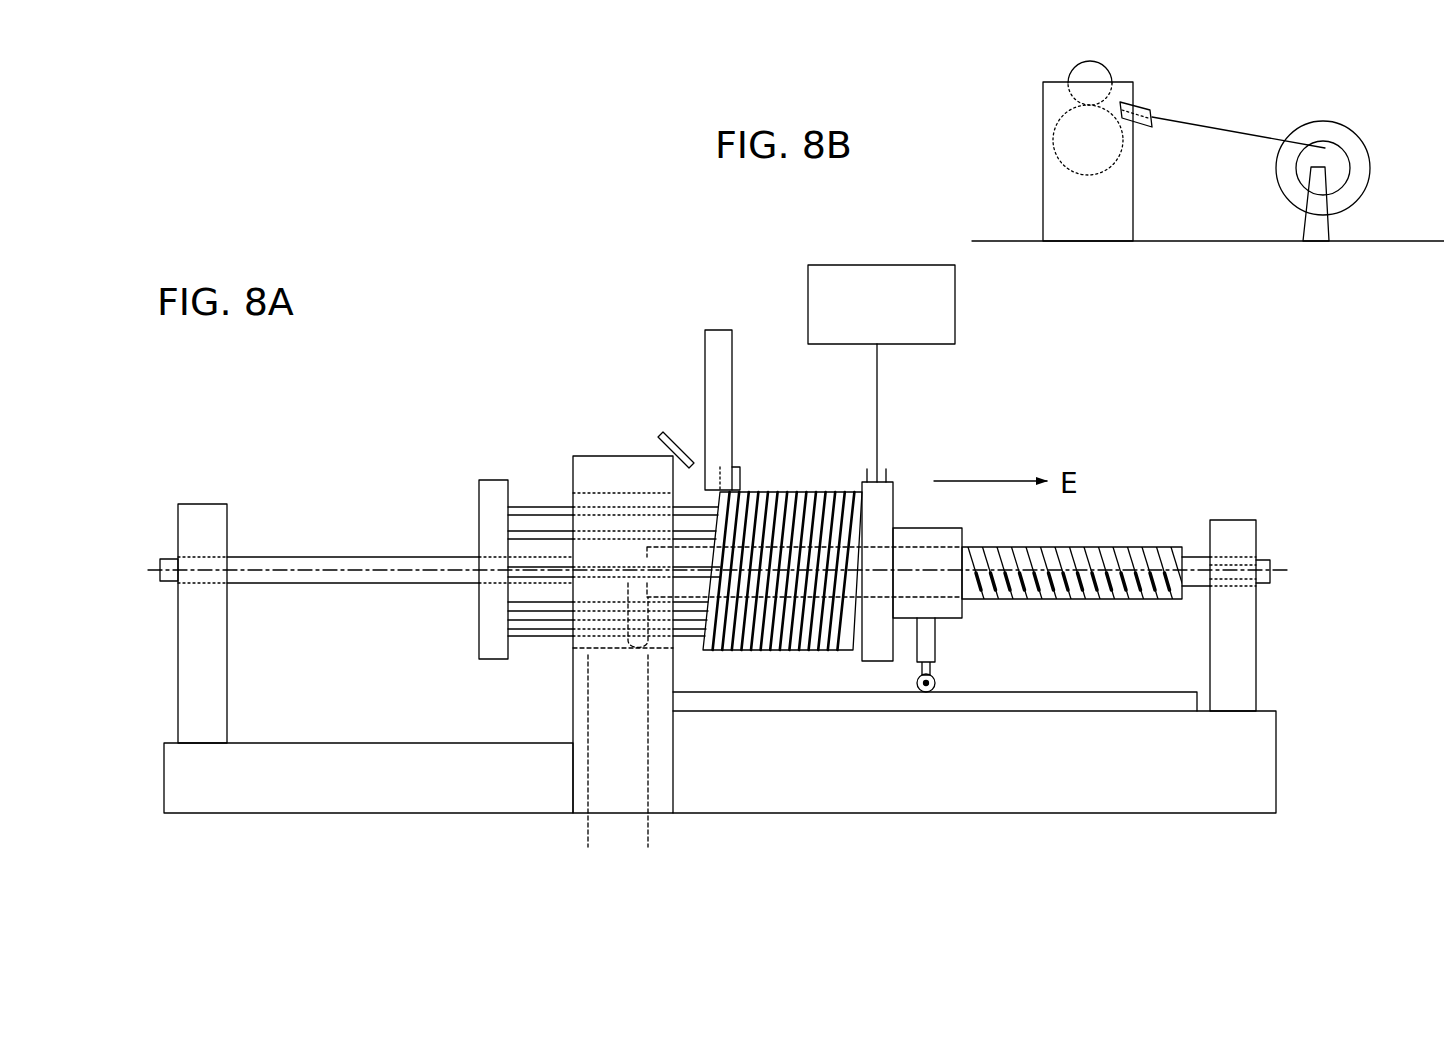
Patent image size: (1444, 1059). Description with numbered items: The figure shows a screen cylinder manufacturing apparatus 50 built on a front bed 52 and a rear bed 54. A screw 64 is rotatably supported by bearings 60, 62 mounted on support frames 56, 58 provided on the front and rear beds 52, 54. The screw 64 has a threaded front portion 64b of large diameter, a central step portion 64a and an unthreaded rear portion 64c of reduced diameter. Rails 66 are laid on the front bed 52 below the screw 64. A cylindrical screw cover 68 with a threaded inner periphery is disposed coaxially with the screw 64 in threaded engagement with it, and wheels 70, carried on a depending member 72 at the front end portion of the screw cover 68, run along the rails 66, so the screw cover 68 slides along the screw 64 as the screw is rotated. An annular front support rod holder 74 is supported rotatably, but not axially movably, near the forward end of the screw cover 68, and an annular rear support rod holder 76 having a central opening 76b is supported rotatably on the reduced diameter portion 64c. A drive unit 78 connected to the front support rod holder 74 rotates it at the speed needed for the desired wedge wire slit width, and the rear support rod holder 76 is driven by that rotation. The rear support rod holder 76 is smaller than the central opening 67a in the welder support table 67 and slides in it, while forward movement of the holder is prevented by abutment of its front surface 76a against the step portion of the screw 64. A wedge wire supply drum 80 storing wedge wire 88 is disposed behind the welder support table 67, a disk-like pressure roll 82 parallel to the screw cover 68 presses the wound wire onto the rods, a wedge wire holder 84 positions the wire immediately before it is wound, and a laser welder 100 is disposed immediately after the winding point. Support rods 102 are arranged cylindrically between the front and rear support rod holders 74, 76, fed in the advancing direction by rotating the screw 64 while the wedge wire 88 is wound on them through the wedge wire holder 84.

In FIG. 8A, the screen cylinder manufacturing apparatus 50 is at (920, 432).
In FIG. 8A, the front bed 52 is at (970, 750).
In FIG. 8A, the rear bed 54 is at (342, 778).
In FIG. 8A, the support frame 56 is at (1256, 640).
In FIG. 8A, the support frame 58 is at (205, 692).
In FIG. 8A, the bearing 60 is at (1232, 550).
In FIG. 8A, the bearing 62 is at (197, 557).
In FIG. 8A, the screw 64 is at (1105, 550).
In FIG. 8A, the central step portion 64a is at (735, 715).
In FIG. 8A, the threaded front portion 64b is at (1158, 547).
In FIG. 8A, the unthreaded rear portion 64c is at (392, 557).
In FIG. 8A, the rails 66 is at (1080, 705).
In FIG. 8A, the welder support table 67 is at (580, 456).
In FIG. 8B, the welder support table 67 is at (1043, 112).
In FIG. 8A, the central opening 67a is at (614, 770).
In FIG. 8A, the screw cover 68 is at (912, 528).
In FIG. 8A, the wheels 70 is at (940, 683).
In FIG. 8A, the support arm 72 is at (935, 632).
In FIG. 8A, the front support rod holder 74 is at (862, 485).
In FIG. 8A, the rear support rod holder 76 is at (478, 482).
In FIG. 8A, the front surface 76a is at (510, 595).
In FIG. 8A, the central opening 76b is at (492, 597).
In FIG. 8A, the drive unit 78 is at (808, 288).
In FIG. 8B, the wedge wire supply drum 80 is at (1340, 125).
In FIG. 8A, the pressure roll 82 is at (715, 330).
In FIG. 8B, the pressure roll 82 is at (1105, 64).
In FIG. 8A, the wedge wire holder 84 is at (745, 468).
In FIG. 8B, the wedge wire holder 84 is at (1150, 112).
In FIG. 8A, the wedge wire 88 is at (805, 650).
In FIG. 8B, the wedge wire 88 is at (1045, 143).
In FIG. 8A, the laser welder 100 is at (660, 435).
In FIG. 8A, the support rods 102 is at (528, 508).